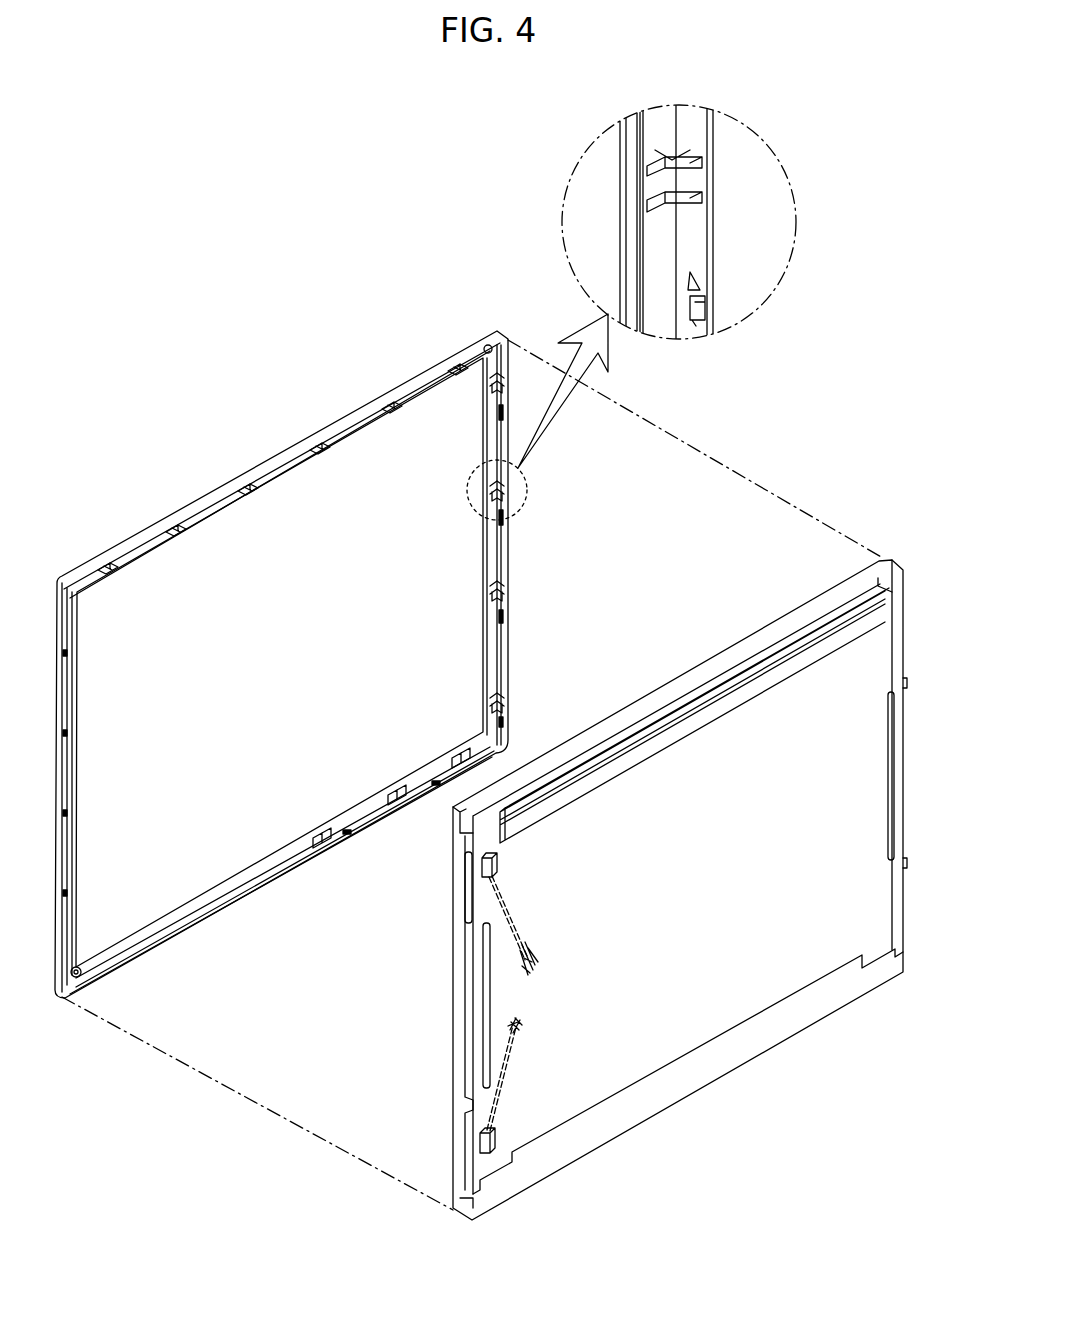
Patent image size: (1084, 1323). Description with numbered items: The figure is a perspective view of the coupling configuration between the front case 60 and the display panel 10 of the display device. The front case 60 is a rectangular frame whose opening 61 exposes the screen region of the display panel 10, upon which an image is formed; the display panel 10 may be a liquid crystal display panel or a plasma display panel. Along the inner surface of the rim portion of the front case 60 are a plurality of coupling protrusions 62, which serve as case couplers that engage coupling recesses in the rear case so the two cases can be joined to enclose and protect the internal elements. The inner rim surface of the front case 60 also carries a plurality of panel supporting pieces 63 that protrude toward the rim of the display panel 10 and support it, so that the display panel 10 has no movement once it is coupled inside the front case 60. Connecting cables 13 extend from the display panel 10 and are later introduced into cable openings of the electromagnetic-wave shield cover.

The display panel 10 is at (770, 632).
The connecting cables 13 is at (536, 1066).
The front case 60 is at (416, 388).
The opening 61 is at (163, 858).
The coupling protrusions 62 is at (406, 850).
The panel supporting pieces 63 is at (358, 870).